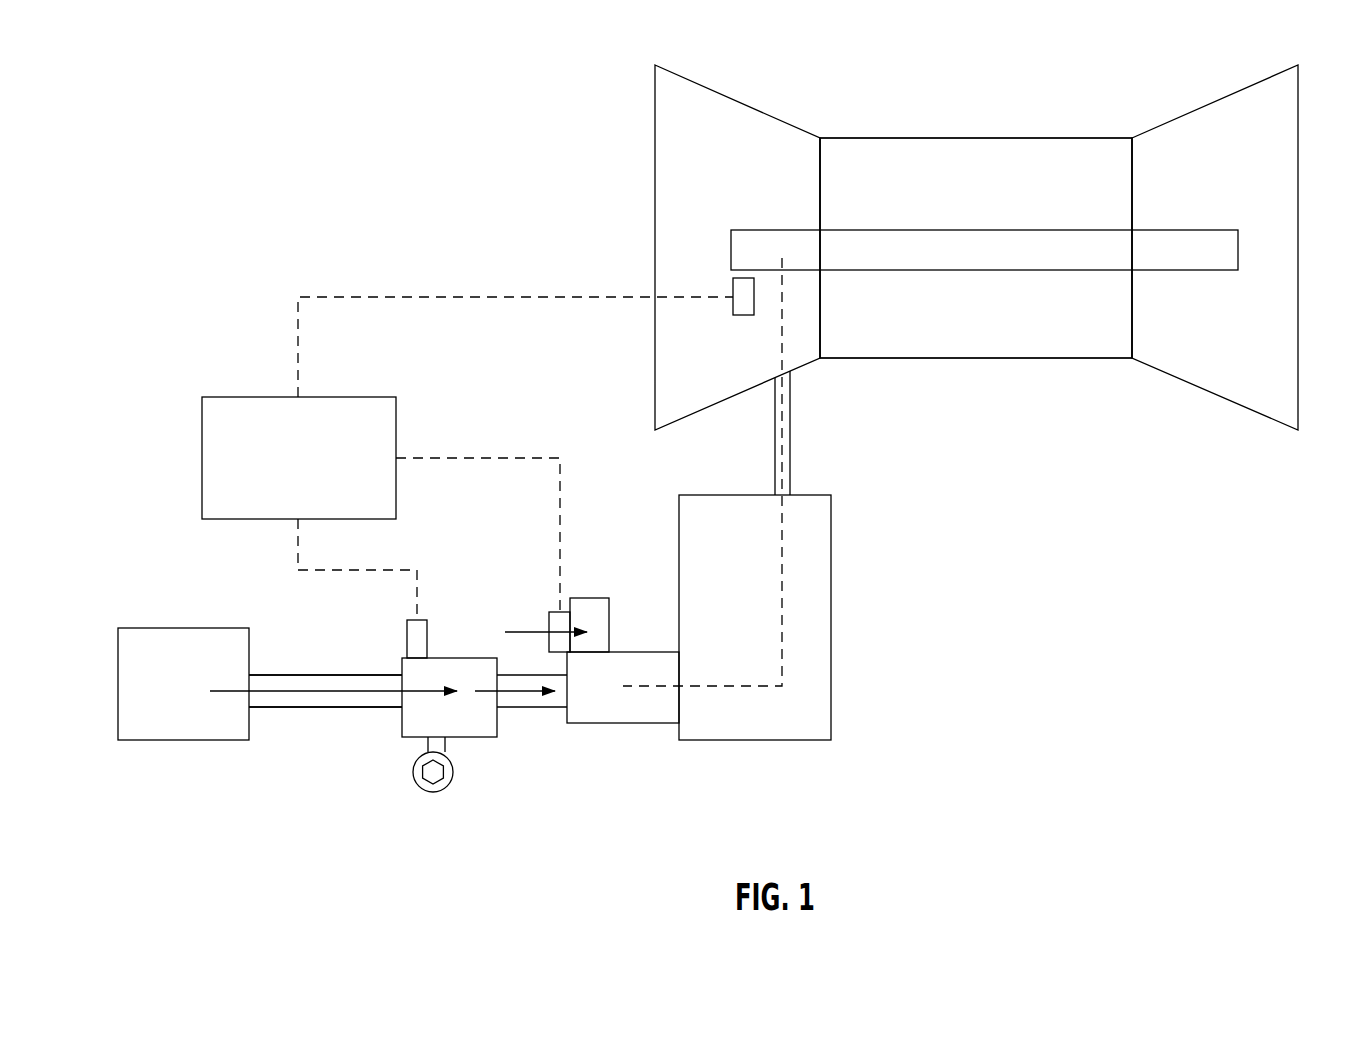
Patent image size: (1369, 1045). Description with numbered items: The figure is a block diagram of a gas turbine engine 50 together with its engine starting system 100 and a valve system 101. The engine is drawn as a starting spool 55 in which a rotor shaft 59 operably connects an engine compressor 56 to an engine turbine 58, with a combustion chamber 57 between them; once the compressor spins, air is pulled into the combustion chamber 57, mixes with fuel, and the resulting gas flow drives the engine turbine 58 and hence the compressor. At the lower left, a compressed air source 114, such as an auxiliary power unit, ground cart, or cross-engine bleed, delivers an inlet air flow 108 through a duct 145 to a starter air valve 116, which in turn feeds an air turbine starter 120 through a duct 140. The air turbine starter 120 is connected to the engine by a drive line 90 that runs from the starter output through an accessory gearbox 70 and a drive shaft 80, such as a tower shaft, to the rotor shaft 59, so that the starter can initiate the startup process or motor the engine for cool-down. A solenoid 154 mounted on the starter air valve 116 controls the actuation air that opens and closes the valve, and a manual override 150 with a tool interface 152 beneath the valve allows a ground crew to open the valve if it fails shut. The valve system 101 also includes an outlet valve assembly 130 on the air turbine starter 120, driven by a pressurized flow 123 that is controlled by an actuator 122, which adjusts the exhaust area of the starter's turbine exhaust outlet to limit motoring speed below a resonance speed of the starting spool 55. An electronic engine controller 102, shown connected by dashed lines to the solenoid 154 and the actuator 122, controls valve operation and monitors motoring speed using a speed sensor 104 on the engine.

The gas turbine engine 50 is at (655, 197).
The starting spool 55 is at (872, 205).
The engine compressor 56 is at (683, 117).
The combustion chamber 57 is at (1078, 160).
The engine turbine 58 is at (1272, 118).
The rotor shaft 59 is at (1240, 252).
The accessory gearbox 70 is at (679, 565).
The drive shaft 80 is at (775, 477).
The drive line 90 is at (782, 328).
The engine starting system 100 is at (522, 434).
The valve system 101 is at (402, 782).
The electronic engine controller 102 is at (272, 397).
The speed sensor 104 is at (733, 305).
The inlet air flow 108 is at (295, 690).
The compressed air source 114 is at (185, 628).
The starter air valve 116 is at (402, 668).
The air turbine starter 120 is at (623, 723).
The actuator 122 is at (549, 612).
The pressurized flow 123 is at (548, 630).
The outlet valve assembly 130 is at (609, 632).
The duct 140 is at (533, 709).
The duct 145 is at (338, 709).
The manual override 150 is at (435, 793).
The tool interface 152 is at (447, 768).
The solenoid 154 is at (427, 635).